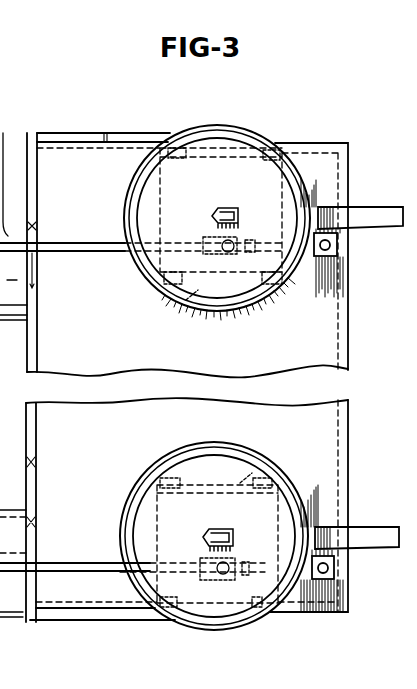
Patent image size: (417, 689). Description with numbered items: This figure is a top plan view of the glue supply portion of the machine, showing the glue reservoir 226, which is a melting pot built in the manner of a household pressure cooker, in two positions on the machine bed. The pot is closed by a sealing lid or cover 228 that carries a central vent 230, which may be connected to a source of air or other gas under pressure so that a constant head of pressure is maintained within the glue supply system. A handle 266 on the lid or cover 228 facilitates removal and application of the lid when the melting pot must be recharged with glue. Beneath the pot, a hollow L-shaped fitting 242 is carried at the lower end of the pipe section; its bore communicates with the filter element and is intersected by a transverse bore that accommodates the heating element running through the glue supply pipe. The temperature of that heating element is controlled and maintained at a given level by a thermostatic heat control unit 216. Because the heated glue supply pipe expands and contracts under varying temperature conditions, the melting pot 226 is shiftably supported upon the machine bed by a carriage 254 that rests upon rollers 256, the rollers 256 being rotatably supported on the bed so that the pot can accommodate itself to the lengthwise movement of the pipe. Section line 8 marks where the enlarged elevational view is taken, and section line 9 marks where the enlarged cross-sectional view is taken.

The thermostatic heat control unit 216 is at (340, 250).
The reservoir 226 is at (193, 127).
The sealing lid 228 is at (218, 142).
The central vent 230 is at (231, 210).
The hollow L-shaped fitting 242 is at (206, 223).
The carriage 254 is at (193, 297).
The rollers 256 is at (175, 145).
The handle 266 is at (369, 212).
The line 8- 8 is at (327, 135).
The line 9- 9 is at (99, 553).